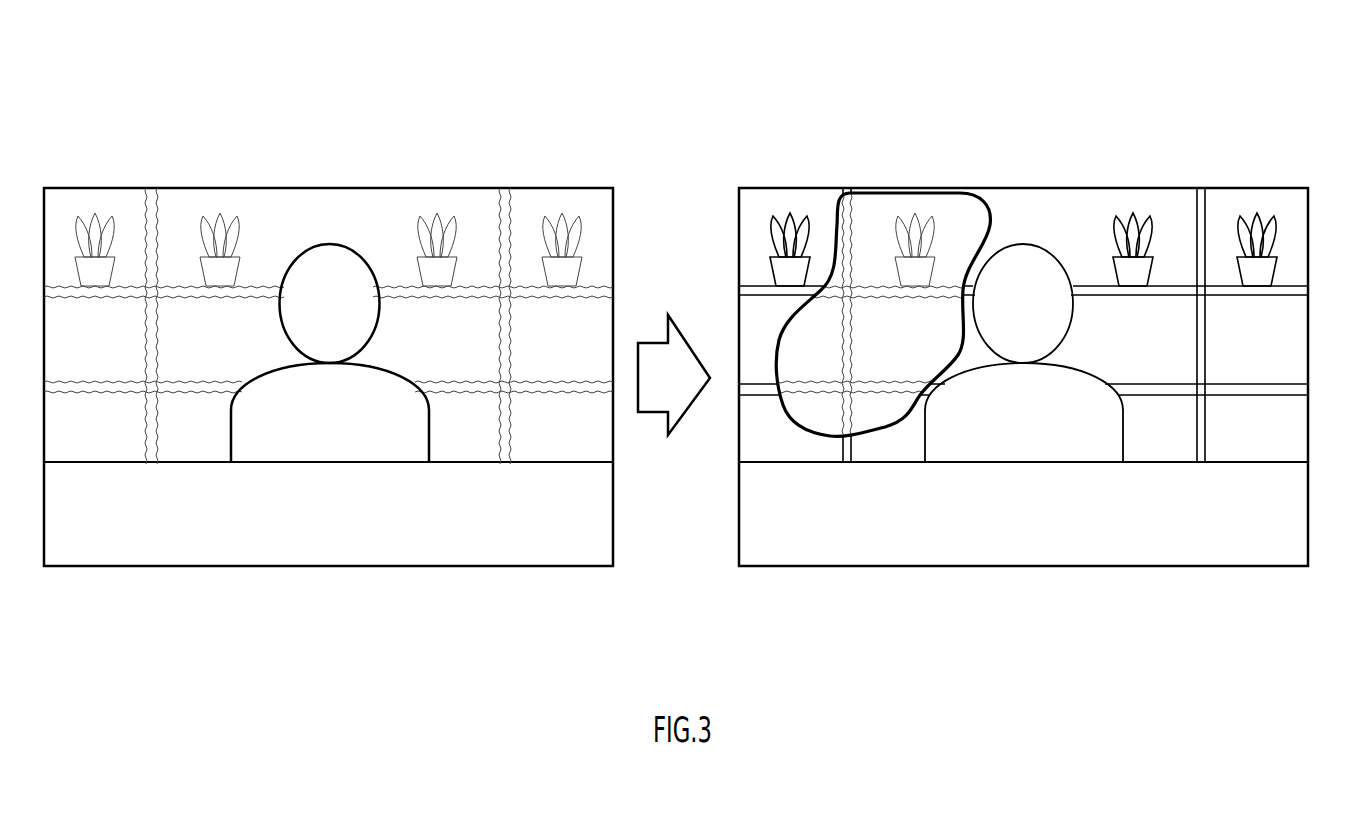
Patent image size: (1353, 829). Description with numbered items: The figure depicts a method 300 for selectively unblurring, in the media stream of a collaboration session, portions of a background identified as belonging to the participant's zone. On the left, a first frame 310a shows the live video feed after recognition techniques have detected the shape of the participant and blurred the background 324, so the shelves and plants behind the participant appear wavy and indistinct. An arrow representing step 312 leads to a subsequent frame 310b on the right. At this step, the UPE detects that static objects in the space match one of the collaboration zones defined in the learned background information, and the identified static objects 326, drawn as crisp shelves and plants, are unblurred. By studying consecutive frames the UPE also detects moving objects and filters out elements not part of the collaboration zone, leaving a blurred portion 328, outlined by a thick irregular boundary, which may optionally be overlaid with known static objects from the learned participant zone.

The method 300 is at (289, 36).
The first frame 310a is at (328, 350).
The subsequent frame 310b is at (1023, 348).
The unblurring step 312 is at (680, 422).
The background 324 is at (163, 201).
The identified static objects 326 is at (1208, 200).
The blurred portion 328 is at (983, 202).